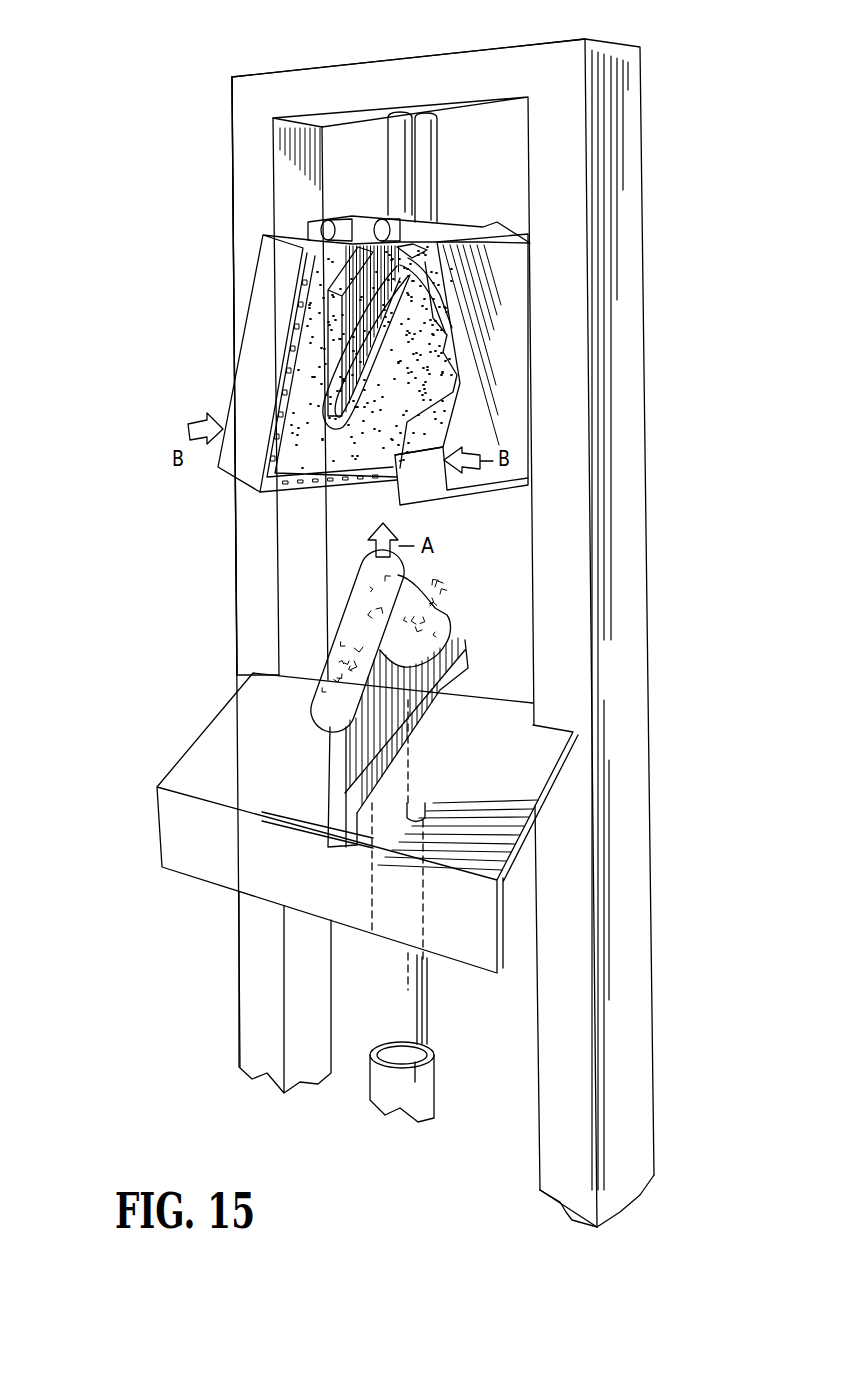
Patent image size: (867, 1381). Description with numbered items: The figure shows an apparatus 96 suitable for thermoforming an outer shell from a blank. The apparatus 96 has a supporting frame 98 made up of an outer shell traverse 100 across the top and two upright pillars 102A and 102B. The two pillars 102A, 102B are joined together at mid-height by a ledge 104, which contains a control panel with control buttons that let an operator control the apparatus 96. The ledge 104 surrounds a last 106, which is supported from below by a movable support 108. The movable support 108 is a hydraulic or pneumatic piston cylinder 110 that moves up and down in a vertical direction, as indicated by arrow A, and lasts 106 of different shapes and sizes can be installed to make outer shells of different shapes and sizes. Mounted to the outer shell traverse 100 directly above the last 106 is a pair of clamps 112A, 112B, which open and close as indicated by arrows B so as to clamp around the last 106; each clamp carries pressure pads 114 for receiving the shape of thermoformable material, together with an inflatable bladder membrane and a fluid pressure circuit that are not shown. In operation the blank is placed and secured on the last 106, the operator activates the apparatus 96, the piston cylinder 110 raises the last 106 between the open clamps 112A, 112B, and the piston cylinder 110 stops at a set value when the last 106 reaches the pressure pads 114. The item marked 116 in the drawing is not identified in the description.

The apparatus 96 is at (145, 187).
The supporting frame 98 is at (652, 239).
The outer shell traverse 100 is at (505, 65).
The pillar 102A is at (621, 598).
The pillar 102B is at (255, 543).
The ledge 104 is at (205, 768).
The last 106 is at (410, 612).
The movable support 108 is at (397, 1045).
The piston cylinder 110 is at (405, 1017).
The clamp 112A is at (498, 358).
The clamp 112B is at (258, 348).
The pressure pads 114 is at (318, 316).
The product portion 116 is at (350, 650).